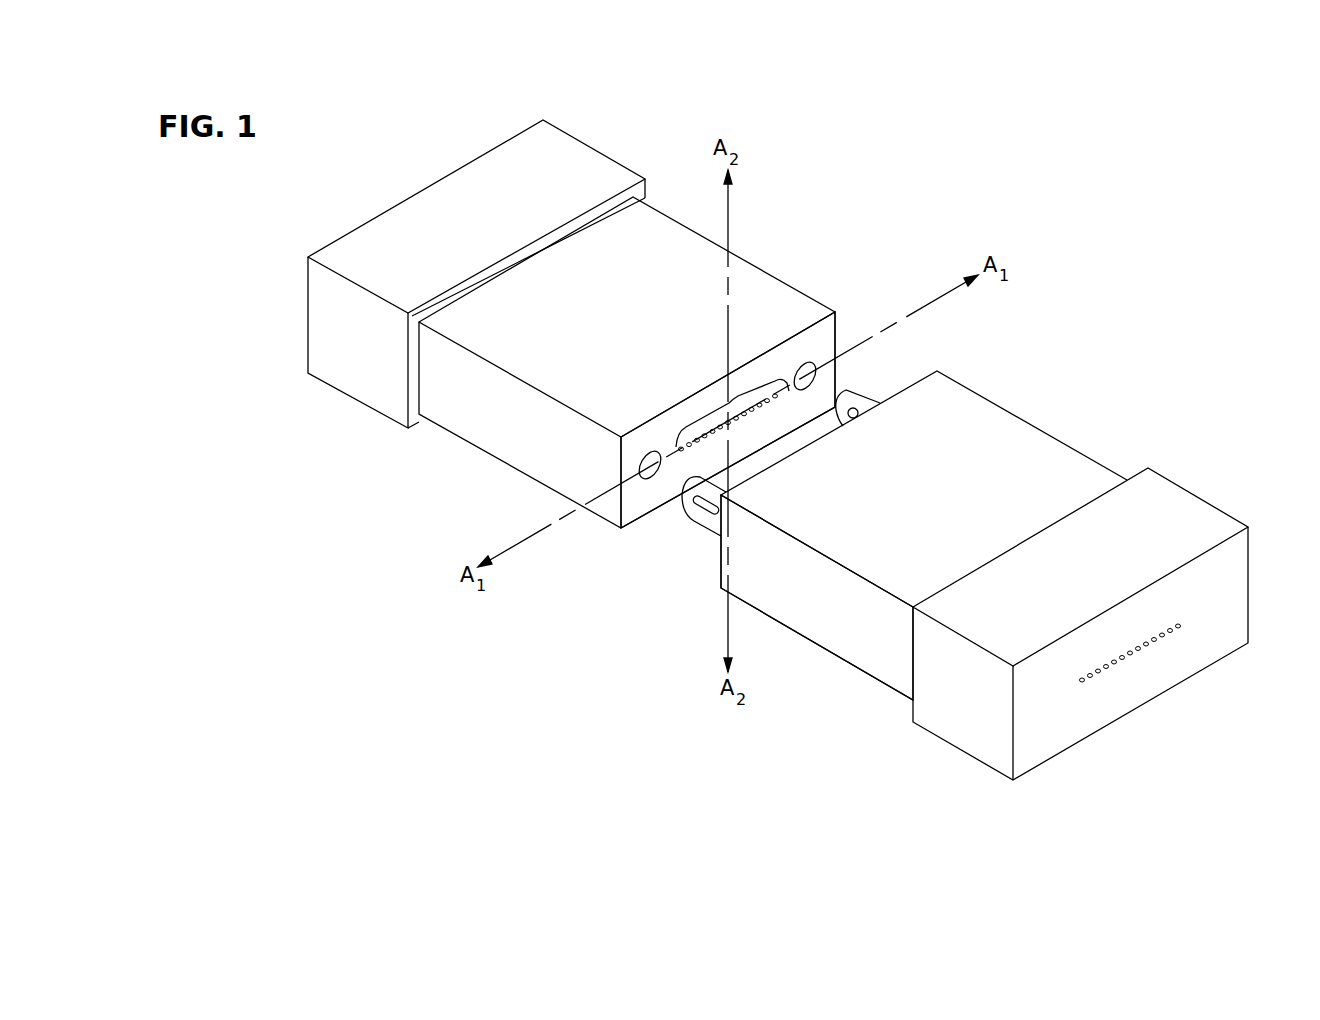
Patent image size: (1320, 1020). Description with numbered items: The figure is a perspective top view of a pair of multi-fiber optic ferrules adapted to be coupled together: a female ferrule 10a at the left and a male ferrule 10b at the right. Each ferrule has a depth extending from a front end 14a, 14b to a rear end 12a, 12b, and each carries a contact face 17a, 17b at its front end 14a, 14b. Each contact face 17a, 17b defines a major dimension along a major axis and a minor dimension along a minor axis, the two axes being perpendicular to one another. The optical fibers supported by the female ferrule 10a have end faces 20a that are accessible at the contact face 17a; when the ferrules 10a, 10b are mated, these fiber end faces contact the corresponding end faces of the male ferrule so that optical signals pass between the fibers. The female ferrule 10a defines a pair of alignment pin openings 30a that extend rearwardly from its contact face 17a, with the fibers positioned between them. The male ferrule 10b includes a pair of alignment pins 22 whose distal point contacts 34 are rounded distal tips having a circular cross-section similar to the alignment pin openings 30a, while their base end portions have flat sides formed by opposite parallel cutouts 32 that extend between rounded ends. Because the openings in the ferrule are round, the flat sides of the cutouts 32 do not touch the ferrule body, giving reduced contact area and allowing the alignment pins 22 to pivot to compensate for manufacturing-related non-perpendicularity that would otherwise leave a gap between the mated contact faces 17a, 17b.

The female ferrule 10a is at (427, 146).
The rear end 12a is at (356, 229).
The front end 14a is at (845, 326).
The contact face 17a is at (793, 357).
The optical fiber end faces 20a is at (733, 398).
The alignment pin openings 30a is at (808, 368).
The male ferrule 10b is at (1158, 740).
The rear end 12b is at (1210, 668).
The front end 14b is at (918, 378).
The contact face 17b is at (716, 524).
The alignment pins 22 is at (875, 390).
The parallel cutouts 32 is at (855, 420).
The distal point contacts 34 is at (845, 395).